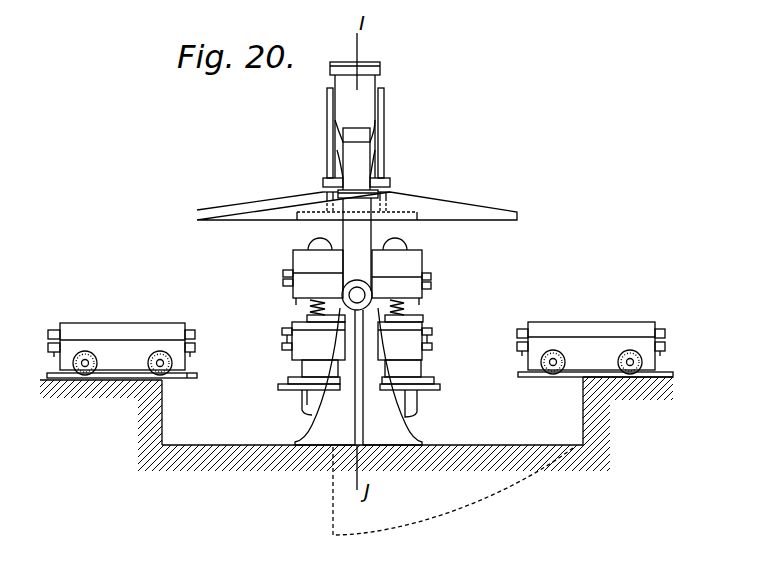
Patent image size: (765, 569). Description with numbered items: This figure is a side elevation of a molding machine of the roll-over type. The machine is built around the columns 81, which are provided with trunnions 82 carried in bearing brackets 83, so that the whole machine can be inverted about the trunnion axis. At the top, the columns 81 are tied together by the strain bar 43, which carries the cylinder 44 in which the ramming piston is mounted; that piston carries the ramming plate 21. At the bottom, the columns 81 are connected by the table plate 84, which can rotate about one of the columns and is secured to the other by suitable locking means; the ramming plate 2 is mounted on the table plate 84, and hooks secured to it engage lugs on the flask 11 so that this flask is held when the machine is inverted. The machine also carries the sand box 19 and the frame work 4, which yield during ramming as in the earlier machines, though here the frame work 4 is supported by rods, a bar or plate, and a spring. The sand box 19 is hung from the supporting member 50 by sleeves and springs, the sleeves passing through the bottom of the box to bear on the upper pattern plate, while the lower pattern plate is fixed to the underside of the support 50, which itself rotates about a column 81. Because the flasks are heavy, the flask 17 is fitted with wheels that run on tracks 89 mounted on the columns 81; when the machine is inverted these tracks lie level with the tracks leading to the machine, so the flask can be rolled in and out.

The ramming plate 2 is at (407, 362).
The frame work 4 is at (315, 350).
The flask 11 is at (300, 337).
The flask 17 is at (412, 265).
The sand box 19 is at (412, 288).
The ramming plate 21 is at (417, 222).
The strain bar 43 is at (372, 168).
The cylinder 44 is at (355, 120).
The supporting member 50 is at (305, 320).
The column 81 is at (357, 209).
The trunnion 82 is at (353, 293).
The bearing bracket 83 is at (358, 376).
The table plate 84 is at (408, 403).
The track 89 is at (298, 203).